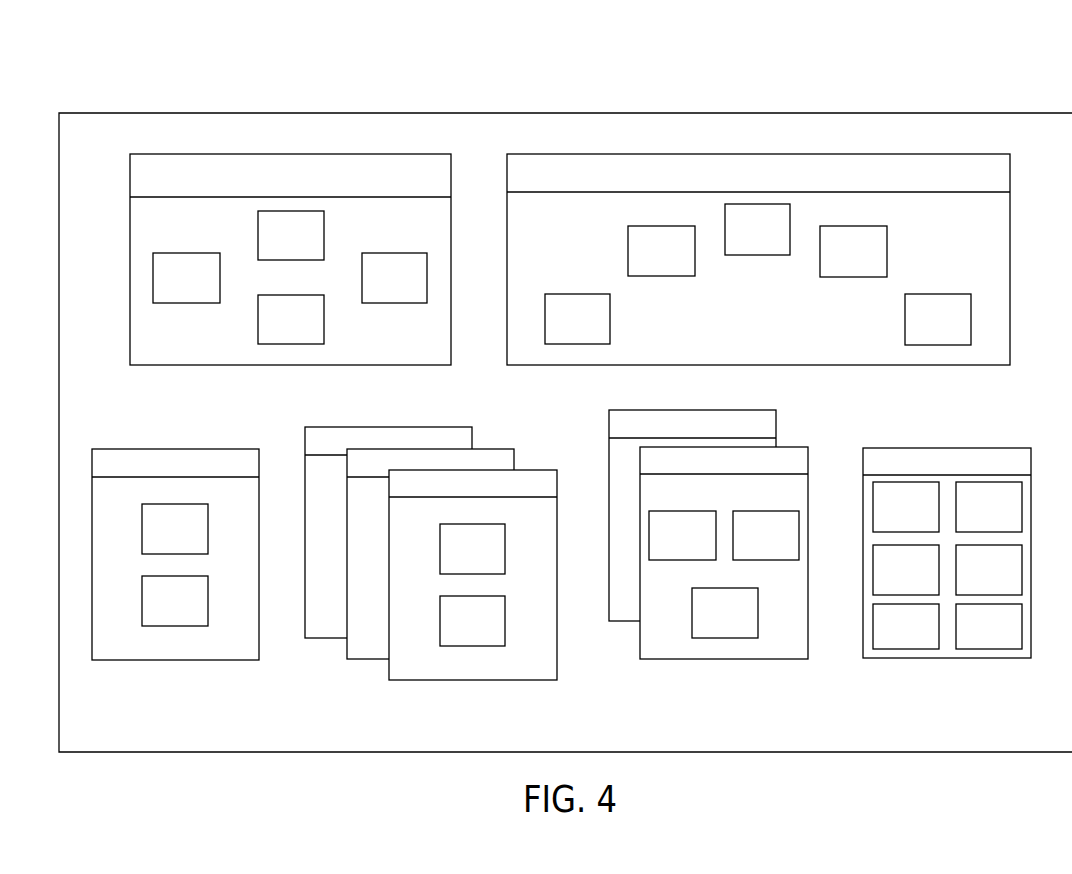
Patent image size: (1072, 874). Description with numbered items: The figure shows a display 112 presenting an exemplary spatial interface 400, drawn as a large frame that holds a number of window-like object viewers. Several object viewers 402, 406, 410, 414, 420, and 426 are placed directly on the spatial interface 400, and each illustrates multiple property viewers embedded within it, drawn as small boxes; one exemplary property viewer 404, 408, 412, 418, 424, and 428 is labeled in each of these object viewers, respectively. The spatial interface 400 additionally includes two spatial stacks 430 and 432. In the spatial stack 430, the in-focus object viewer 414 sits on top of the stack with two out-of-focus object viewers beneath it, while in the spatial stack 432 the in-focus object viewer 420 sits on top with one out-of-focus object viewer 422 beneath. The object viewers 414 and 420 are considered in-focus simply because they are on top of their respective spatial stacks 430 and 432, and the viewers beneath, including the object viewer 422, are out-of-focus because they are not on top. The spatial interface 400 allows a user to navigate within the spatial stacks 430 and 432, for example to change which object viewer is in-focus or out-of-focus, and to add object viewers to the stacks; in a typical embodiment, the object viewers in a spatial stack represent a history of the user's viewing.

The display 112 is at (98, 94).
The spatial interface 400 is at (157, 113).
The object viewer 402 is at (191, 154).
The property viewer 404 is at (283, 211).
The object viewer 406 is at (572, 154).
The property viewer 408 is at (662, 226).
The object viewer 410 is at (103, 449).
The property viewer 412 is at (175, 504).
The in-focus object viewer 414 is at (400, 470).
The property viewer 418 is at (470, 524).
The in-focus object viewer 420 is at (712, 447).
The out-of-focus object viewer 422 is at (630, 410).
The property viewer 424 is at (700, 638).
The object viewer 426 is at (890, 448).
The property viewer 428 is at (980, 482).
The spatial stack 430 is at (282, 424).
The spatial stack 432 is at (587, 423).